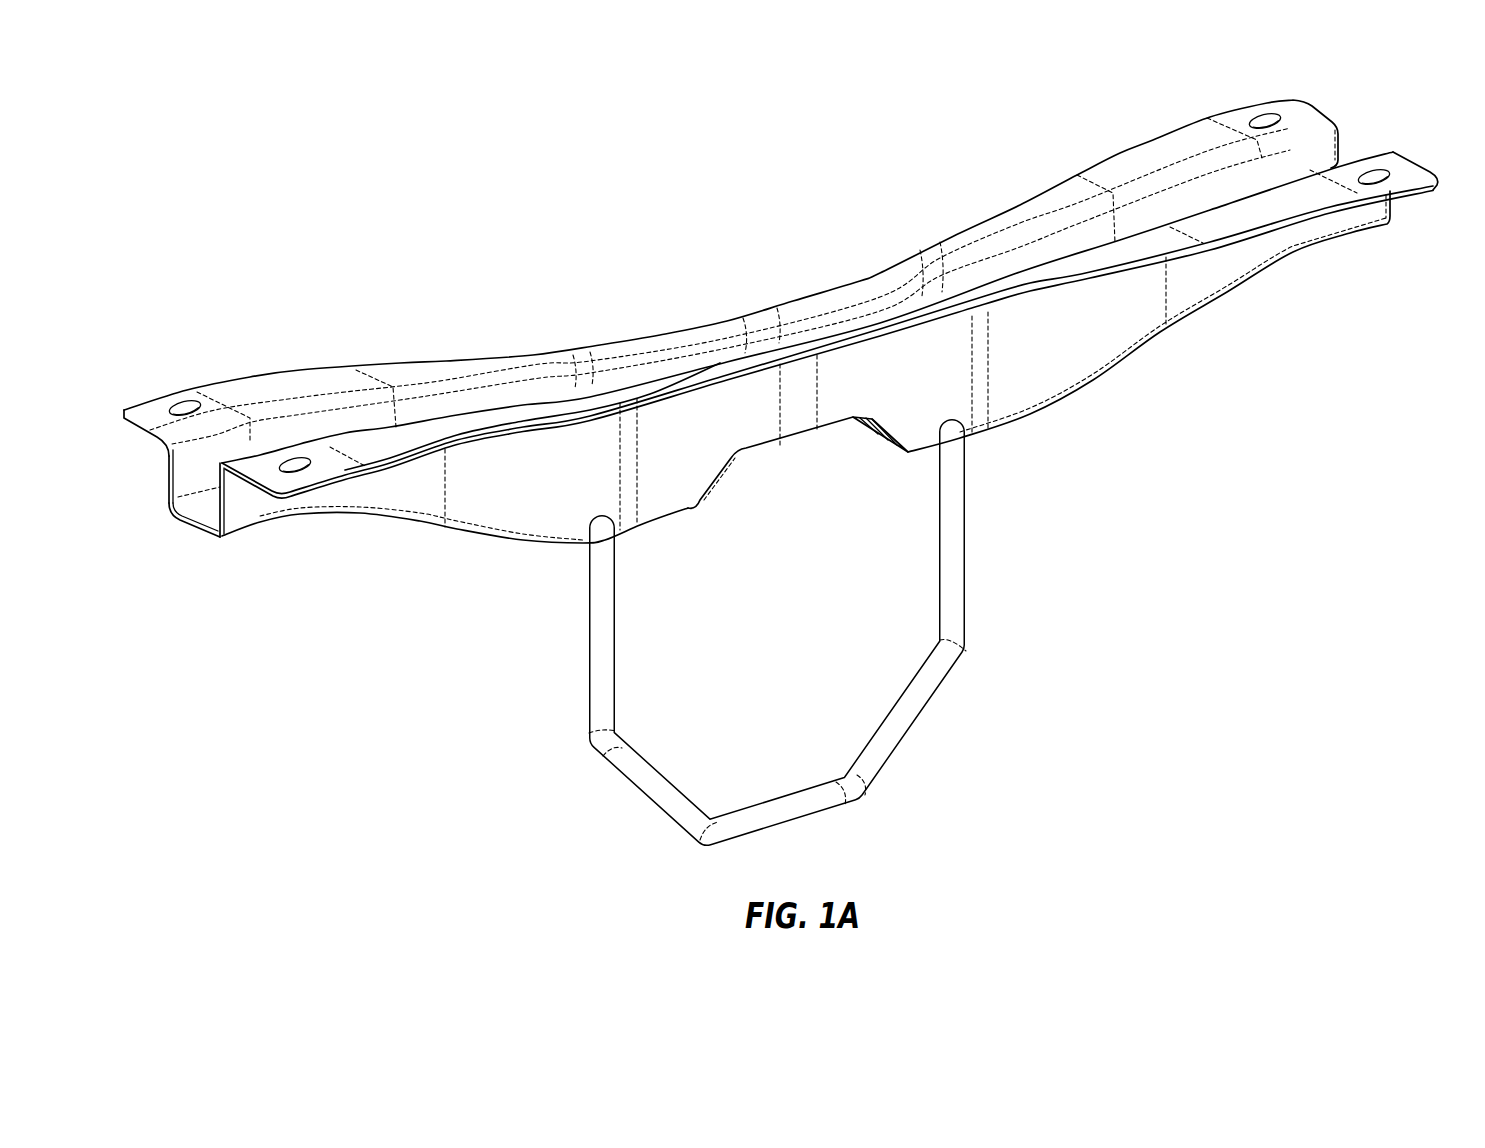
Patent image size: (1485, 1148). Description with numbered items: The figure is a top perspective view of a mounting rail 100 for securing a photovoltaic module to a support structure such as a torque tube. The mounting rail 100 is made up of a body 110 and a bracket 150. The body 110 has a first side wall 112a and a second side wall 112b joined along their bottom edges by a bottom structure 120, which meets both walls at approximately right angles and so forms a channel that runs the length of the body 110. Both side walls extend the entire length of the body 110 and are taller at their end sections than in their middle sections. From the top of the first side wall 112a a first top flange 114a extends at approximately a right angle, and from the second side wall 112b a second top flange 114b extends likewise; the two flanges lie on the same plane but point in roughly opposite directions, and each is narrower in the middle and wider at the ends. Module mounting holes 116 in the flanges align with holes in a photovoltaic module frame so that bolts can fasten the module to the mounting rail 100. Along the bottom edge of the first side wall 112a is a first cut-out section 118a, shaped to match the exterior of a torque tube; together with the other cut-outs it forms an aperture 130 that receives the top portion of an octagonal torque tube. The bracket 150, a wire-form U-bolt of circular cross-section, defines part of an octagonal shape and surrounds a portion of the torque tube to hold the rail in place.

The mounting rail 100 is at (165, 108).
The body 110 is at (168, 470).
The first side wall 112a is at (1080, 353).
The second side wall 112b is at (1024, 258).
The first top flange 114a is at (1289, 204).
The second top flange 114b is at (1148, 152).
The module mounting holes 116 is at (175, 405).
The first cut-out section 118a is at (745, 452).
The bottom structure 120 is at (180, 517).
The aperture 130 is at (817, 442).
The bracket 150 is at (587, 630).